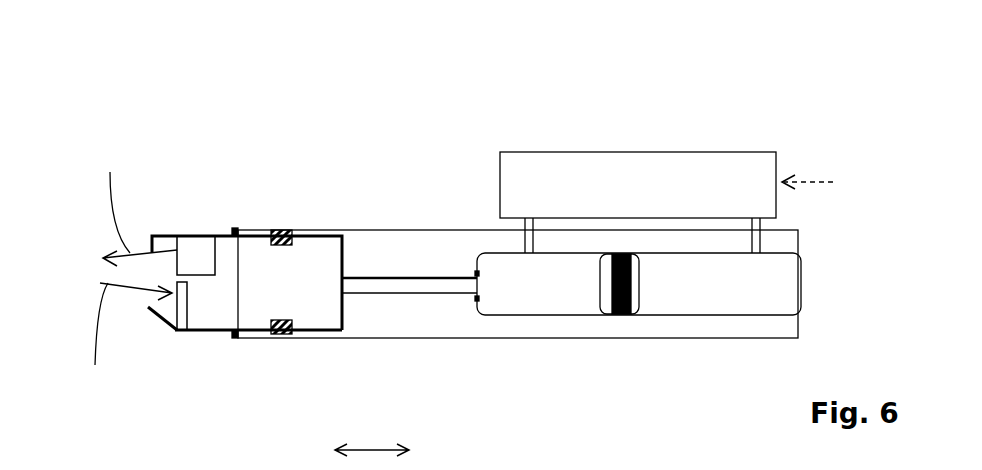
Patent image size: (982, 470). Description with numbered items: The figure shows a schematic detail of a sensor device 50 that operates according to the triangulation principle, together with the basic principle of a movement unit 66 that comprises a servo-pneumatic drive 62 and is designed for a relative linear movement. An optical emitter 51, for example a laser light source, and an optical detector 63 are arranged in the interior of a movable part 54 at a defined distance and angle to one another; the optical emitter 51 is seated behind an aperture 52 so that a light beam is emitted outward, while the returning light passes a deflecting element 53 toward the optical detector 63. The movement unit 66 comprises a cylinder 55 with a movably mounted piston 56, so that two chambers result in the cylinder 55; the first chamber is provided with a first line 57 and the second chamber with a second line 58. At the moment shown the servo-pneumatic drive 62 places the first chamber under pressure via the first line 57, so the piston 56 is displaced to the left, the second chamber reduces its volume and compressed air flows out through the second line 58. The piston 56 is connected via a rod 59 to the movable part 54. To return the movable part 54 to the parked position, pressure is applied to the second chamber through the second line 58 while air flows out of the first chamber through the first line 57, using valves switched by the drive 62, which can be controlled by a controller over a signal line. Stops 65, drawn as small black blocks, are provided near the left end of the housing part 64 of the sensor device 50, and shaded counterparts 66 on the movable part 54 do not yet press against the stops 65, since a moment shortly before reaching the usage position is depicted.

The sensor device 50 is at (518, 56).
The optical emitter 51 is at (197, 243).
The aperture 52 is at (150, 243).
The reflector / deflecting element 53 is at (148, 308).
The movable part 54 is at (223, 335).
The cylinder 55 is at (742, 315).
The piston 56 is at (600, 315).
The first line 57 is at (756, 240).
The second line 58 is at (520, 237).
The rod 59 is at (410, 290).
The servo-pneumatic drive 62 is at (685, 192).
The optical detector 63 is at (182, 324).
The housing part 64 is at (473, 338).
The stops 65 is at (233, 228).
The movement unit / counterparts 66 is at (283, 230).